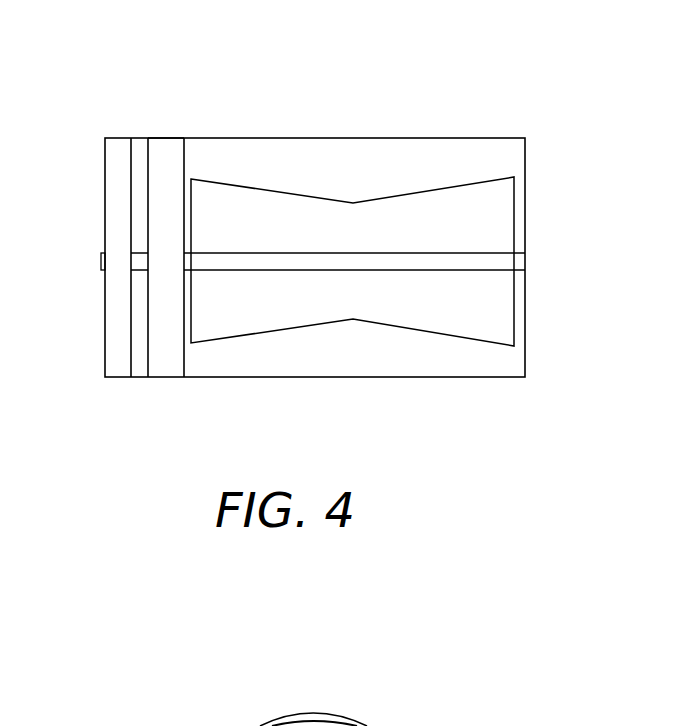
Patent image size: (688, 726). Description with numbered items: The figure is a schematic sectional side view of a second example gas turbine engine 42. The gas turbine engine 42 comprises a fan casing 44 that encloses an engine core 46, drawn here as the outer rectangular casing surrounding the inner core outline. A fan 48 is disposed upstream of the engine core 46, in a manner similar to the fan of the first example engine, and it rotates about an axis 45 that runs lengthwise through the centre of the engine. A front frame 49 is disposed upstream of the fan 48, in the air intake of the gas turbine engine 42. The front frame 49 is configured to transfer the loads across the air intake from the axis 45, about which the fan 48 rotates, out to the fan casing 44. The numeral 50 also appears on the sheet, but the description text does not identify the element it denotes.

The gas turbine engine 42 is at (134, 44).
The fan casing 44 is at (462, 138).
The axis 45 is at (491, 260).
The engine core 46 is at (514, 207).
The fan 48 is at (168, 150).
The front frame 49 is at (117, 207).
The resonator device 50 is at (132, 719).